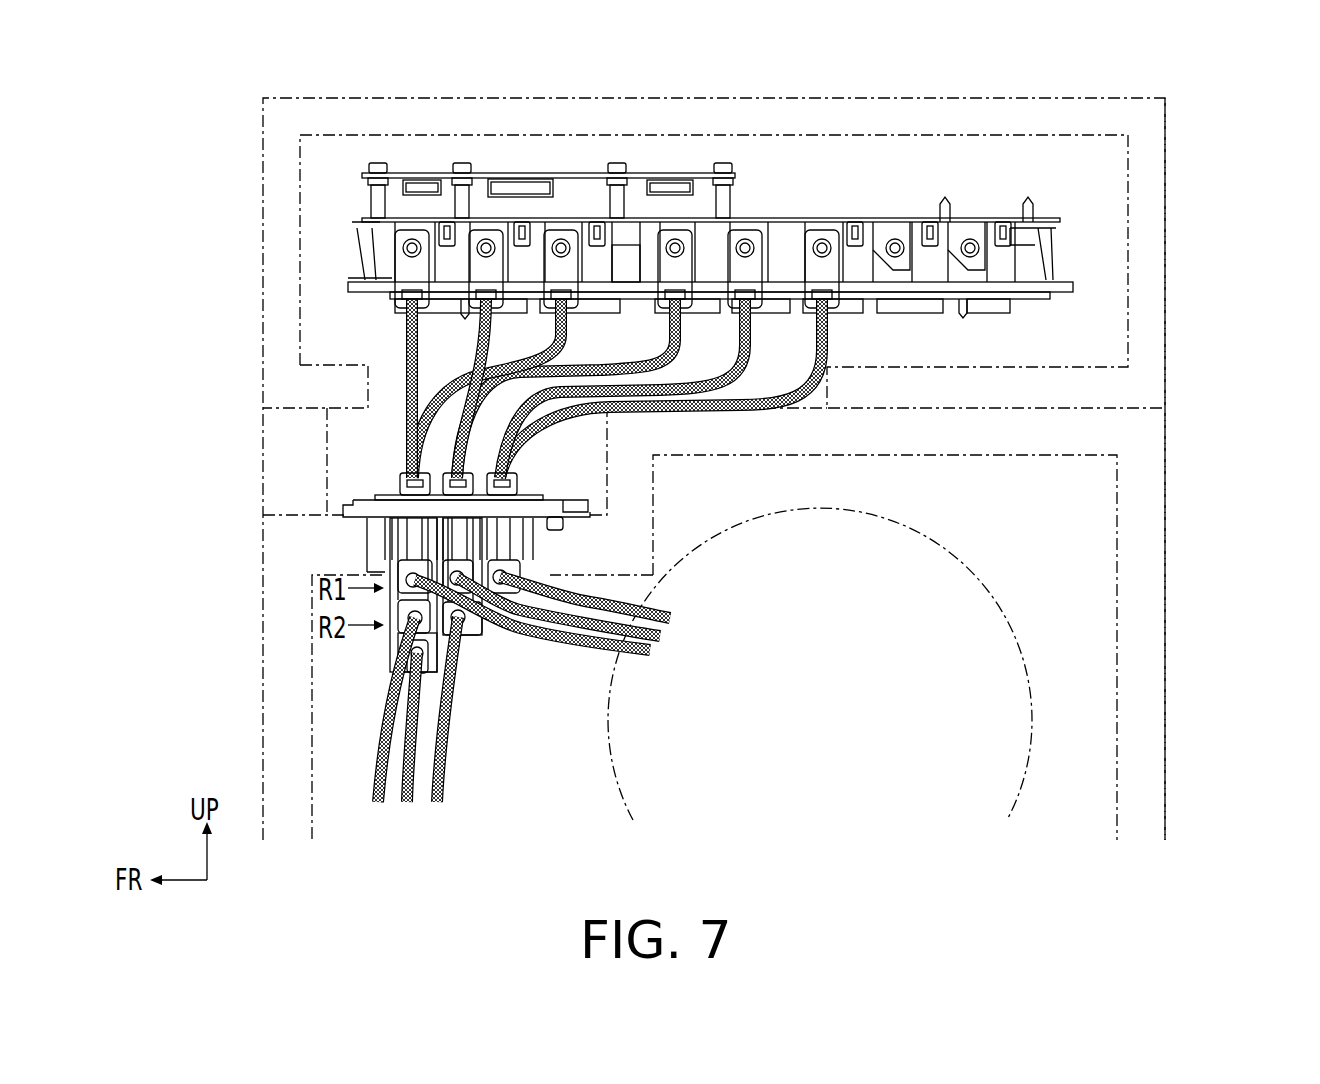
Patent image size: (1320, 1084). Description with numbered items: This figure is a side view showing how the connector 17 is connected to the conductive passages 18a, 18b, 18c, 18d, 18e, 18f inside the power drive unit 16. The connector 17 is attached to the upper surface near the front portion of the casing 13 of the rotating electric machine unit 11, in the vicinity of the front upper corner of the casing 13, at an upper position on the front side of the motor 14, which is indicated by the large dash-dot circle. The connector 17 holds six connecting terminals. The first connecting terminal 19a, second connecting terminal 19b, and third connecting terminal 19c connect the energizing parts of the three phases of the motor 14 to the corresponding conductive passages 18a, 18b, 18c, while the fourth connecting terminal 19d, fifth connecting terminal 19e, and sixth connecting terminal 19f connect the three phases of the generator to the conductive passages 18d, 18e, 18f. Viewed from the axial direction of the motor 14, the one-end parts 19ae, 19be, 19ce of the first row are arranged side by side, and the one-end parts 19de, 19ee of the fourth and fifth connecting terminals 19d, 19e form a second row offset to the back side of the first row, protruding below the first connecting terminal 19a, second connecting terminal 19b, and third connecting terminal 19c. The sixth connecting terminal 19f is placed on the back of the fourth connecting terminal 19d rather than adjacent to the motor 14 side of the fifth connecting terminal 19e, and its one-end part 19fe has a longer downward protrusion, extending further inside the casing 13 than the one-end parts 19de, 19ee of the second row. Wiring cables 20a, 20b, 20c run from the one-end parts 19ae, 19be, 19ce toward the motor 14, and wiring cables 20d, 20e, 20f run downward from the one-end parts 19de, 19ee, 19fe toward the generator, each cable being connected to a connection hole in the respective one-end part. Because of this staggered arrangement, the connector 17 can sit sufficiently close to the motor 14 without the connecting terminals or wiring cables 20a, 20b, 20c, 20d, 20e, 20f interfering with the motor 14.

The rotating electric machine unit 11 is at (1166, 640).
The casing 13 is at (1170, 572).
The motor 14 is at (1033, 737).
The power drive unit 16 is at (955, 100).
The connector 17 is at (360, 501).
The conductive passage 18a is at (664, 241).
The conductive passage 18b is at (745, 240).
The conductive passage 18c is at (822, 240).
The conductive passage 18d is at (403, 244).
The conductive passage 18e is at (477, 241).
The conductive passage 18f is at (553, 241).
The first connecting terminal 19a is at (420, 528).
The second connecting terminal 19b is at (462, 522).
The third connecting terminal 19c is at (500, 530).
The fourth connecting terminal 19d is at (398, 607).
The fifth connecting terminal 19e is at (470, 622).
The sixth connecting terminal 19f is at (430, 668).
The one-end part 19ae is at (412, 572).
The one-end part 19be is at (465, 583).
The one-end part 19ce is at (520, 570).
The one-end part 19de is at (410, 622).
The one-end part 19ee is at (478, 635).
The one-end part 19fe is at (418, 665).
The wiring cable 20a is at (650, 652).
The wiring cable 20b is at (662, 637).
The wiring cable 20c is at (672, 618).
The wiring cable 20d is at (375, 765).
The wiring cable 20e is at (440, 790).
The wiring cable 20f is at (406, 805).